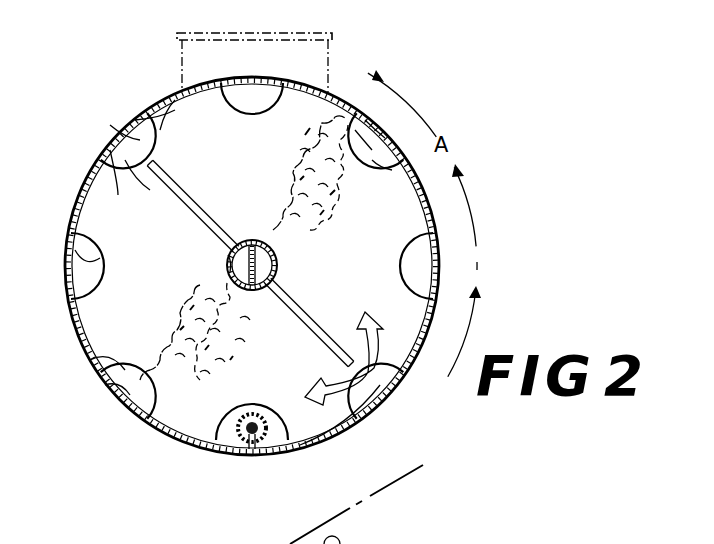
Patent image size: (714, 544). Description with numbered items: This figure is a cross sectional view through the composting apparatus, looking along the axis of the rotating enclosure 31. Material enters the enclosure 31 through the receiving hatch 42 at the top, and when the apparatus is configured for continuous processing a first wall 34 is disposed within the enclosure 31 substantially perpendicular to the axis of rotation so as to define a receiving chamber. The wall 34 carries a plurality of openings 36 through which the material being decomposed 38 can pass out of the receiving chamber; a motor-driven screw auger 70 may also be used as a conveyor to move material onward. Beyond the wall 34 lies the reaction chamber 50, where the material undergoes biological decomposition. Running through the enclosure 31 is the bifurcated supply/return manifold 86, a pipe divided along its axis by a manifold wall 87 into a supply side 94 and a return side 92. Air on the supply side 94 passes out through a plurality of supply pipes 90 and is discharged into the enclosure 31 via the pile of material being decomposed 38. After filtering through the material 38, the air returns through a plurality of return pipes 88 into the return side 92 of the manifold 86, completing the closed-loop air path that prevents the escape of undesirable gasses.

The enclosure 31 is at (175, 127).
The first wall 34 is at (231, 163).
The openings 36 is at (75, 268).
The material being decomposed 38 is at (305, 178).
The receiving hatch 42 is at (262, 27).
The reaction chamber 50 is at (383, 406).
The screw auger 70 is at (237, 458).
The bifurcated supply/return manifold 86 is at (257, 290).
The manifold wall 87 is at (267, 232).
The return pipes 88 is at (195, 208).
The supply pipes 90 is at (316, 327).
The return side 92 is at (228, 257).
The supply side 94 is at (277, 270).